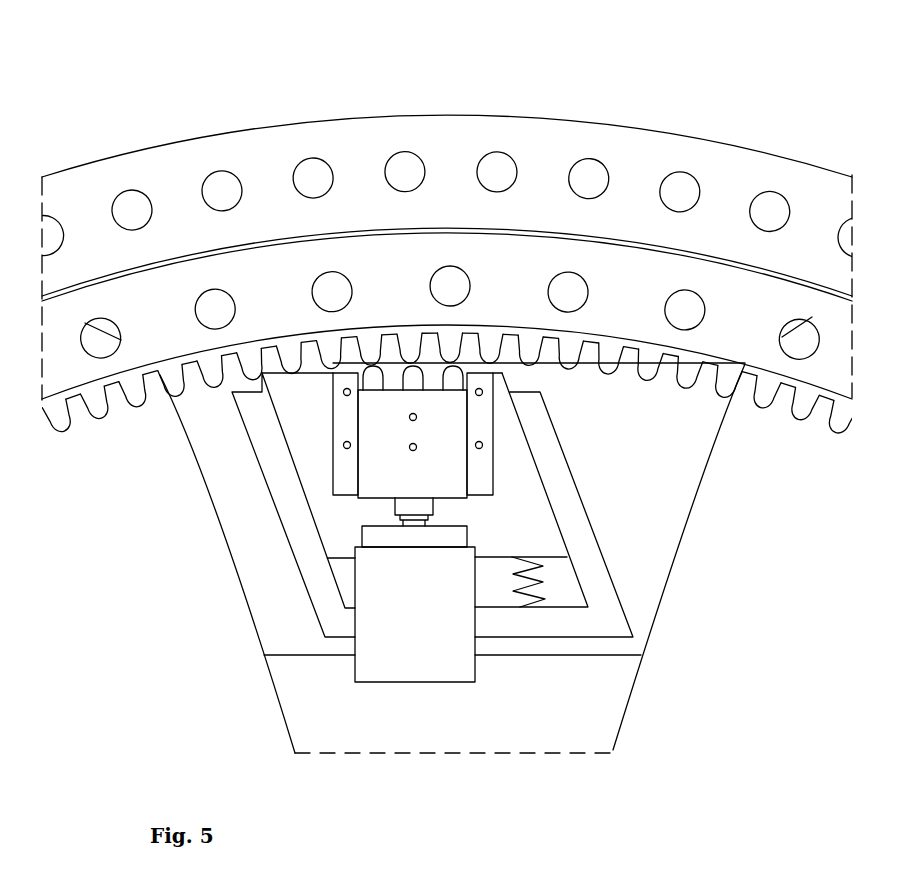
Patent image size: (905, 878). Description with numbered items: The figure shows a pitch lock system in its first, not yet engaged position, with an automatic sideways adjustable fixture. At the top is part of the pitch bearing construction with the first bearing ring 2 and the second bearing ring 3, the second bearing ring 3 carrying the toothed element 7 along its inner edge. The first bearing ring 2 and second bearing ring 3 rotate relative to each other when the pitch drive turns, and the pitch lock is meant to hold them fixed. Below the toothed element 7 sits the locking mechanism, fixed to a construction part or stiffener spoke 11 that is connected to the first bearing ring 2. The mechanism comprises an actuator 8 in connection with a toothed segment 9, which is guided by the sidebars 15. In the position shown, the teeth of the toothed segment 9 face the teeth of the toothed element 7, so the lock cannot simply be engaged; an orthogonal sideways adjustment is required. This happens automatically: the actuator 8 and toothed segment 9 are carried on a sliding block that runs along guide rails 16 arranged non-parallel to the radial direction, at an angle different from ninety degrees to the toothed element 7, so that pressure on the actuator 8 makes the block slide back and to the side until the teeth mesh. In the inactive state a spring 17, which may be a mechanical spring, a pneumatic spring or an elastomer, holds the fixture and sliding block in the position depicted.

The first bearing ring 2 is at (263, 147).
The second bearing ring 3 is at (449, 257).
The toothed element 7 is at (760, 392).
The actuator 8 is at (418, 635).
The toothed segment 9 is at (443, 452).
The construction part/stiffener spoke 11 is at (595, 720).
The sidebars 15 is at (480, 418).
The guide rails 16 is at (570, 493).
The spring 17 is at (543, 582).